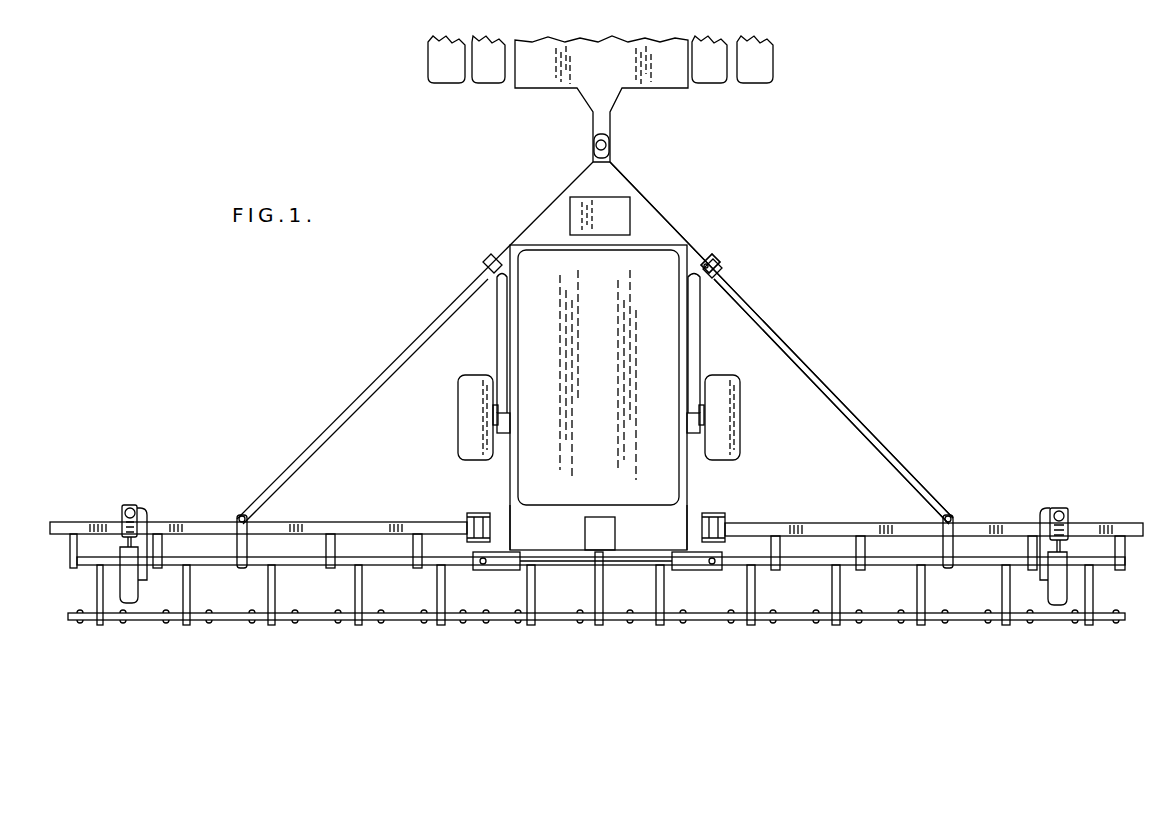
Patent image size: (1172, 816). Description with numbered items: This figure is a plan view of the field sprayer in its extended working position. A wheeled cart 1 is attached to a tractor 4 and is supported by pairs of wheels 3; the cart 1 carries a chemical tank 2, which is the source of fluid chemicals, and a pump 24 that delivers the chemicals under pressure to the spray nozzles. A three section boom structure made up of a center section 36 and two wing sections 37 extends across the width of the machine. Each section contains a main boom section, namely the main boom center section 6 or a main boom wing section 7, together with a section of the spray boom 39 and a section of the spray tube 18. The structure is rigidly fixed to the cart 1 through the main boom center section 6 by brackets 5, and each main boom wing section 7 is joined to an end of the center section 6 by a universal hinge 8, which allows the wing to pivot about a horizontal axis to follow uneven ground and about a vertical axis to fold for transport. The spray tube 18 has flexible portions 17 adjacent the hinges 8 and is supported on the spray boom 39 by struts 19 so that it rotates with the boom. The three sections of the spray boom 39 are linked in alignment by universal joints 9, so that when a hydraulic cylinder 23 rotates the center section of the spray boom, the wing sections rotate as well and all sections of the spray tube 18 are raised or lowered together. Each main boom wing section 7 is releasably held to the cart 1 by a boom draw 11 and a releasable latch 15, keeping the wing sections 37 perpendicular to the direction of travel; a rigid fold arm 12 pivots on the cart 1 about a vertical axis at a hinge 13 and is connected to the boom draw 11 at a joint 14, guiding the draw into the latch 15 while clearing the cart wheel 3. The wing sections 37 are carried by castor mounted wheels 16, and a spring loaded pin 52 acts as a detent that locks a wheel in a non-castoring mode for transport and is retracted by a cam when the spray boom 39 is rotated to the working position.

The cart 1 is at (616, 178).
The chemical tank 2 is at (690, 465).
The wheels 3 is at (466, 438).
The tractor 4 is at (608, 92).
The brackets 5 is at (508, 530).
The main boom center section 6 is at (553, 566).
The main boom wing section 7 is at (210, 526).
The universal hinges 8 is at (467, 514).
The universal joints 9 is at (480, 570).
The boom draw 11 is at (793, 356).
The fold arm 12 is at (497, 330).
The hinge 13 is at (492, 418).
The joint 14 is at (714, 272).
The releasable latch 15 is at (702, 258).
The wheels 16 is at (139, 595).
The flexible portions 17 is at (488, 615).
The spray tube 18 is at (135, 620).
The struts 19 is at (96, 598).
The hydraulic cylinder 23 is at (600, 556).
The pump 24 is at (622, 207).
The center section 36 is at (572, 563).
The wing sections 37 is at (351, 527).
The spray boom 39 is at (77, 561).
The spring loaded pin 52 is at (123, 510).